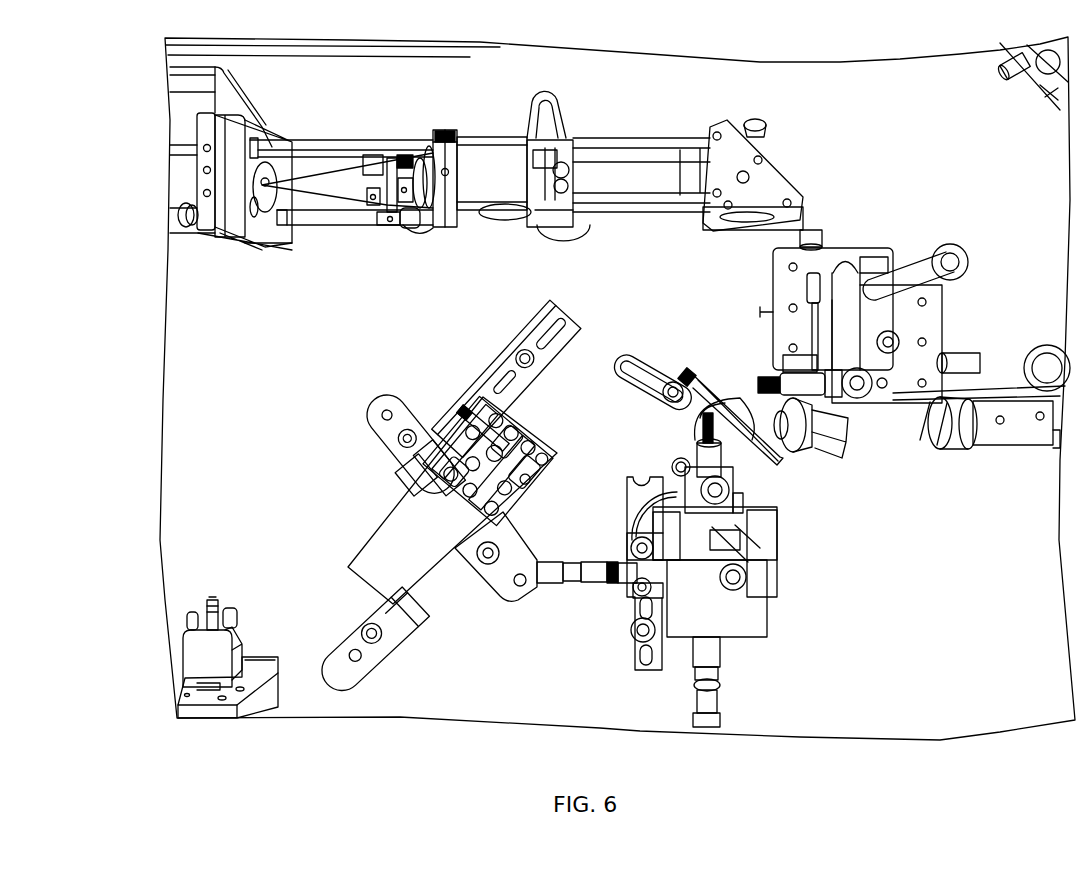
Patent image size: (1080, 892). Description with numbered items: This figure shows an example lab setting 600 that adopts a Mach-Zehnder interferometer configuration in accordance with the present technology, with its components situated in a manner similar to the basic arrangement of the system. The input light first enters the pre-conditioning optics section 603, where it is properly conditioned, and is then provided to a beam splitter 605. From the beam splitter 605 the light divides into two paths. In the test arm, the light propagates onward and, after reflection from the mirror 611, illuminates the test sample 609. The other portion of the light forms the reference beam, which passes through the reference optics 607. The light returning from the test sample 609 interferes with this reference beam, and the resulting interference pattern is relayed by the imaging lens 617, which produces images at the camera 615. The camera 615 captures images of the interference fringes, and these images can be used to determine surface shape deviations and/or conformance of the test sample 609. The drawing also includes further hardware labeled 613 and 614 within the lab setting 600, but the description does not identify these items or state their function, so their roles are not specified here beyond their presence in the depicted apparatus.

The lab setting 600 is at (129, 71).
The pre-conditioning optics section 603 is at (439, 131).
The beam splitter 605 is at (503, 134).
The reference optics 607 is at (689, 436).
The test sample 609 is at (744, 372).
The mirror 611 is at (781, 178).
The clamp assembly 613 is at (394, 464).
The lever arm 614 is at (787, 469).
The camera 615 is at (1003, 452).
The imaging lens 617 is at (814, 457).